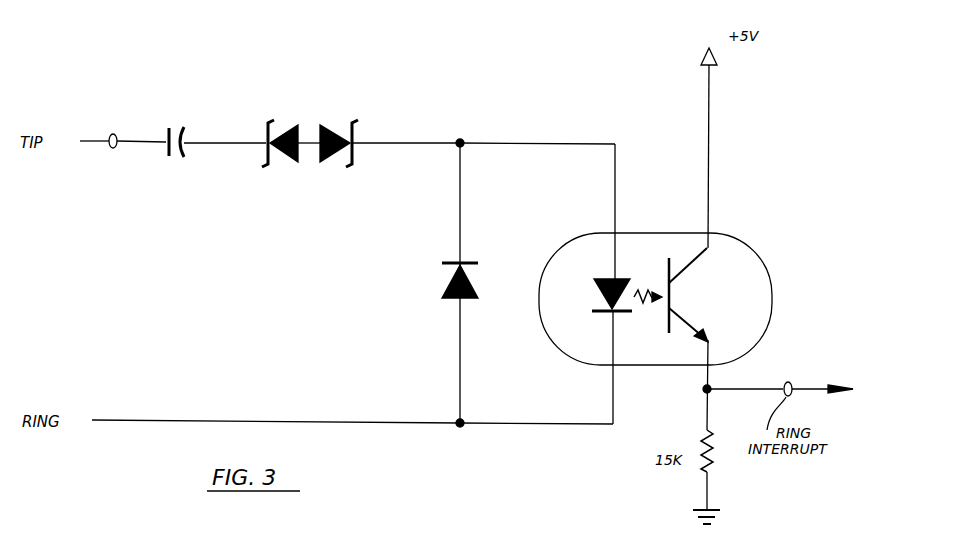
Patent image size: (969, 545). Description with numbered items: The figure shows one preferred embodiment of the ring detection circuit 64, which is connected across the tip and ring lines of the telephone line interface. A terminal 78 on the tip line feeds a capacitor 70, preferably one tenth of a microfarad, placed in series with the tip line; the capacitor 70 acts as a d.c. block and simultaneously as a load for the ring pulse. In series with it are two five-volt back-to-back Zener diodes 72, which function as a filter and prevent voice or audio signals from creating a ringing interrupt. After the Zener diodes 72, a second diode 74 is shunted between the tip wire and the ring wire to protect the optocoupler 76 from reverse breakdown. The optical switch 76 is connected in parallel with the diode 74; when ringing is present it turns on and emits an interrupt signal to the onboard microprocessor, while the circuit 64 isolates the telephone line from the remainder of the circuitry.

The TIP terminal 78 is at (116, 135).
The capacitor 70 is at (187, 137).
The back-to-back Zener diodes 72 is at (315, 110).
The ring detection circuit 64 is at (462, 133).
The second diode 74 is at (475, 280).
The optical switch 76 is at (720, 233).